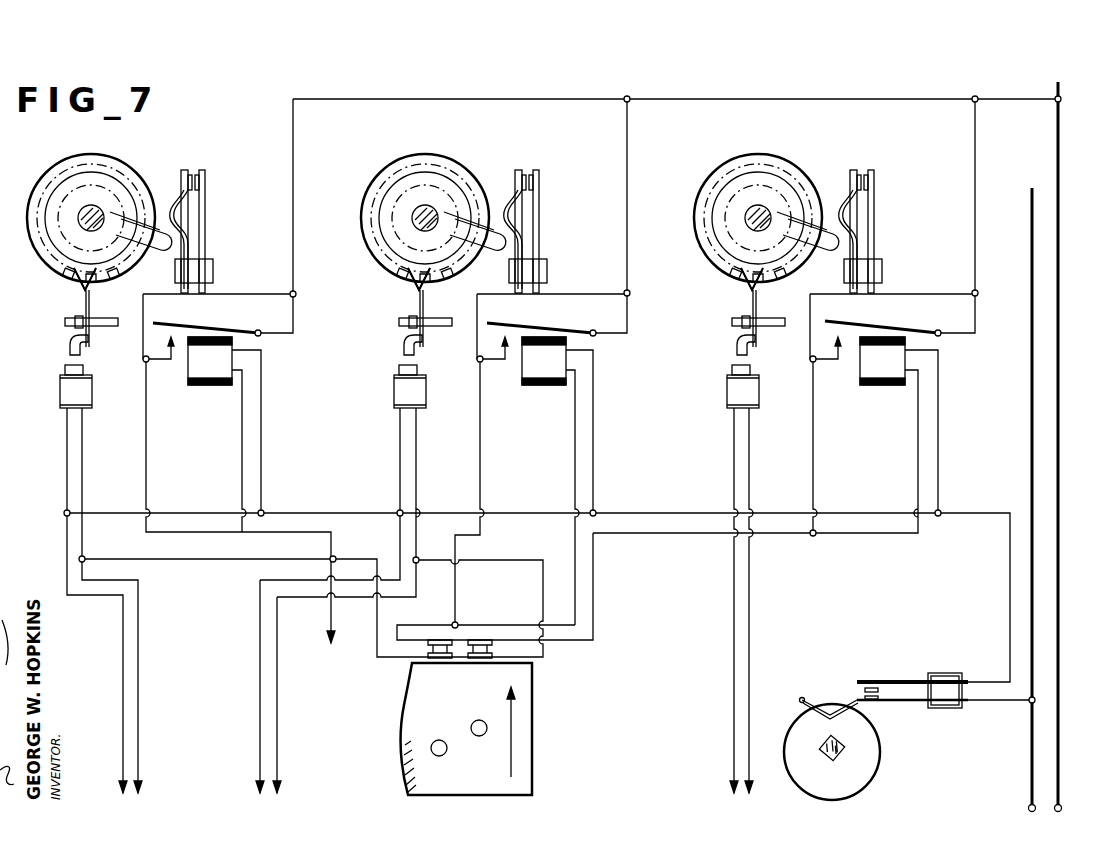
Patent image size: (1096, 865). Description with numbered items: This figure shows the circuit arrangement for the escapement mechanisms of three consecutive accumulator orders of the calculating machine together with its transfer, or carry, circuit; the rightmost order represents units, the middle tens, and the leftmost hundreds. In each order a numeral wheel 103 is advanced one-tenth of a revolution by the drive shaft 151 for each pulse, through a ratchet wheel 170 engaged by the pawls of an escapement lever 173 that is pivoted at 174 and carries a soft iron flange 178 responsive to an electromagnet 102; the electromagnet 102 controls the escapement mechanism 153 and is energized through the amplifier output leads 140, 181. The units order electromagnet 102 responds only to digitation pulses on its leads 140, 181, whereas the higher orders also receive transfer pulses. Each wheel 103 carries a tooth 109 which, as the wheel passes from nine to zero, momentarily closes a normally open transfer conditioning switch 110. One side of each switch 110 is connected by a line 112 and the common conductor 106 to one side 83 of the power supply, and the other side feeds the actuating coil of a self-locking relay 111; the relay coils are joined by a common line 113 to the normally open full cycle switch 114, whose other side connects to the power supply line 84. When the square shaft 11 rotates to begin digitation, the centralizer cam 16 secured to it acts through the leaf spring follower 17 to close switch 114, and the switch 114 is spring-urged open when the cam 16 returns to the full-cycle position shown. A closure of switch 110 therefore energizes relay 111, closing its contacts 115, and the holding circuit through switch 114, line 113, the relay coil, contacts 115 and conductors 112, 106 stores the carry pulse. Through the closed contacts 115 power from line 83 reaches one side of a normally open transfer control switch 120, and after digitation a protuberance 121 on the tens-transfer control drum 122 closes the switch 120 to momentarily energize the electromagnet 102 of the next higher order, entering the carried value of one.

The common conductor 106 is at (787, 99).
The power supply side 83 is at (1060, 442).
The power supply line 84 is at (1030, 421).
The numeral wheel 103 is at (136, 174).
The drive shaft 151 is at (428, 214).
The tooth 109 is at (148, 254).
The transfer conditioning switch 110 is at (202, 169).
The line 112 is at (627, 186).
The contacts 115 is at (518, 323).
The self-locking relay 111 is at (209, 365).
The common line 113 is at (150, 512).
The ratchet wheel 170 is at (408, 277).
The lever 173 is at (92, 305).
The pivot 174 is at (94, 332).
The flange 178 is at (426, 341).
The escapement mechanism 153 is at (406, 302).
The electromagnet 102 is at (90, 392).
The amplifier output lead 140 is at (260, 674).
The amplifier output lead 181 is at (277, 677).
The transfer control switch 120 is at (477, 640).
The protuberance 121 is at (479, 737).
The tens-transfer control drum 122 is at (520, 739).
The full cycle switch 114 is at (869, 680).
The leaf spring follower 17 is at (808, 701).
The cam 16 is at (867, 758).
The square shaft 11 is at (843, 740).